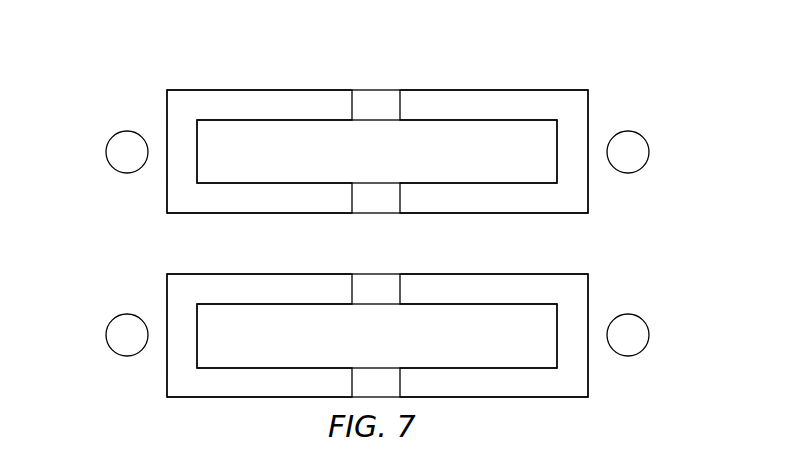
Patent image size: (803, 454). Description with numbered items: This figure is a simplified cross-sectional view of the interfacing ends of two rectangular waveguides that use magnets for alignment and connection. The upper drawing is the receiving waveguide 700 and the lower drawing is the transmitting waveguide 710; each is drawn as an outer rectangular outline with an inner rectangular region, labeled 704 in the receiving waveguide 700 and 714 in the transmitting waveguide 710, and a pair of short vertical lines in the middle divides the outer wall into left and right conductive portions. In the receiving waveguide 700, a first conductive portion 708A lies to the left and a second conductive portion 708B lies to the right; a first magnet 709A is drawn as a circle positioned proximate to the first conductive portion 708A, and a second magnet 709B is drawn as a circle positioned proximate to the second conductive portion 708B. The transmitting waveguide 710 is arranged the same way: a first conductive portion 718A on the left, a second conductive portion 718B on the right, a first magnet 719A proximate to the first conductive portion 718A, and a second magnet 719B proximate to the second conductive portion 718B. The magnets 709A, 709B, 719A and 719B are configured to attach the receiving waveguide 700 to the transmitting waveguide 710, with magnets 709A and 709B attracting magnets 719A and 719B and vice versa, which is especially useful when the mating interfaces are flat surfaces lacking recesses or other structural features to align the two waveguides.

The receiving waveguide 700 is at (125, 90).
The first core 704 is at (393, 163).
The first conductive portion 708A is at (258, 102).
The second conductive portion 708B is at (483, 98).
The first magnet 709A is at (117, 147).
The second magnet 709B is at (633, 142).
The transmitting waveguide 710 is at (125, 272).
The second core 714 is at (393, 348).
The first conductive portion 718A is at (258, 287).
The second conductive portion 718B is at (483, 282).
The first magnet 719A is at (117, 330).
The second magnet 719B is at (633, 327).